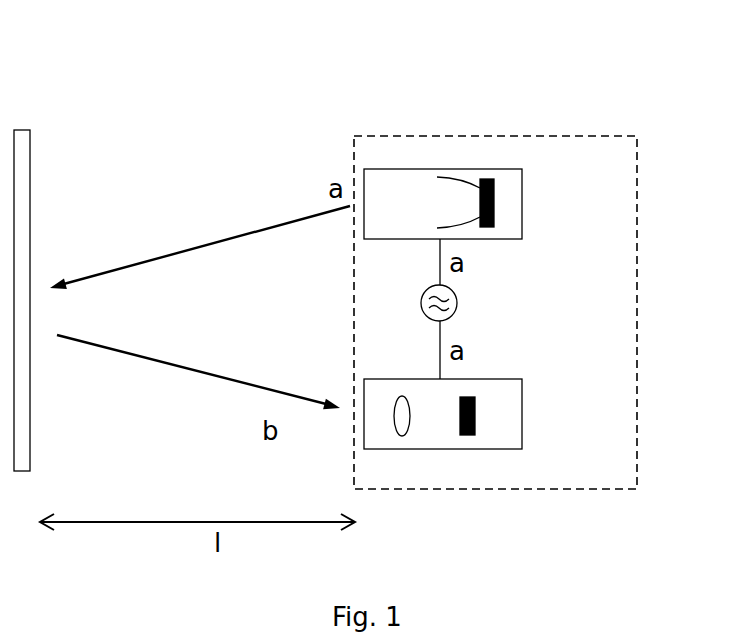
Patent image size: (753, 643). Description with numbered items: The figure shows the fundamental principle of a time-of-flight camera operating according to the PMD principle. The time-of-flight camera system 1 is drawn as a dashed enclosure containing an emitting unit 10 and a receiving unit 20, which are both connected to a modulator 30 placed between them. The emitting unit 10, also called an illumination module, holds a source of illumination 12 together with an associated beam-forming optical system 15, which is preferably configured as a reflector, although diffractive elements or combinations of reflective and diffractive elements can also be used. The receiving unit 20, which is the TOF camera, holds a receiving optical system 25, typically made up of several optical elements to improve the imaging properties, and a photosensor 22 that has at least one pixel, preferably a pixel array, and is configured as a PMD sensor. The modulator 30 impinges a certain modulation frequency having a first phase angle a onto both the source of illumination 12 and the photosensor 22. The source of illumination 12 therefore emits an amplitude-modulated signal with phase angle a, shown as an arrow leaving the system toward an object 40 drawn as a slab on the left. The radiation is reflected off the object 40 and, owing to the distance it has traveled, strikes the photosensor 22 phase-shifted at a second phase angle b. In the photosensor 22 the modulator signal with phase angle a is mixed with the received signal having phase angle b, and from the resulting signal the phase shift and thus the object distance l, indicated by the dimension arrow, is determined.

The time-of-flight camera system 1 is at (624, 124).
The emitting unit 10 is at (416, 153).
The source of illumination 12 is at (500, 201).
The beam-forming optical system 15 is at (460, 174).
The receiving unit 20 is at (496, 470).
The photosensor 22 is at (479, 417).
The receiving optical system 25 is at (405, 440).
The modulator 30 is at (462, 294).
The object 40 is at (23, 155).